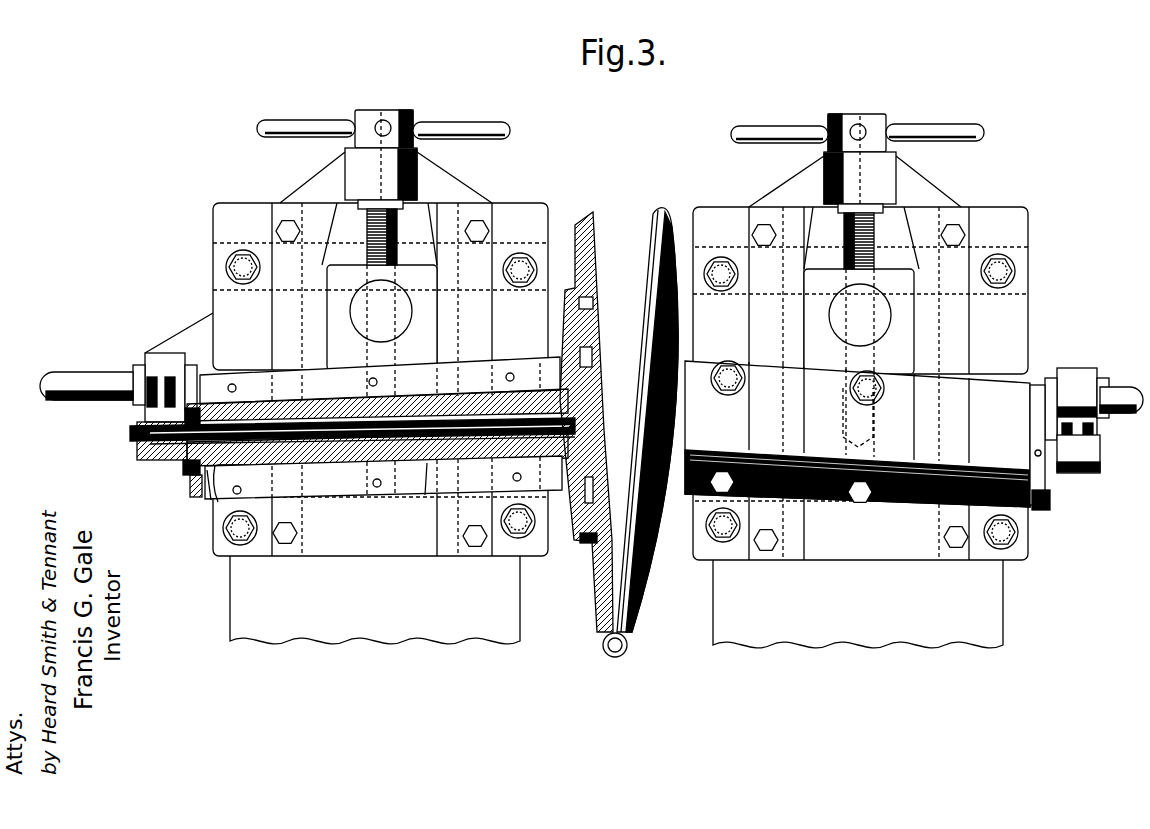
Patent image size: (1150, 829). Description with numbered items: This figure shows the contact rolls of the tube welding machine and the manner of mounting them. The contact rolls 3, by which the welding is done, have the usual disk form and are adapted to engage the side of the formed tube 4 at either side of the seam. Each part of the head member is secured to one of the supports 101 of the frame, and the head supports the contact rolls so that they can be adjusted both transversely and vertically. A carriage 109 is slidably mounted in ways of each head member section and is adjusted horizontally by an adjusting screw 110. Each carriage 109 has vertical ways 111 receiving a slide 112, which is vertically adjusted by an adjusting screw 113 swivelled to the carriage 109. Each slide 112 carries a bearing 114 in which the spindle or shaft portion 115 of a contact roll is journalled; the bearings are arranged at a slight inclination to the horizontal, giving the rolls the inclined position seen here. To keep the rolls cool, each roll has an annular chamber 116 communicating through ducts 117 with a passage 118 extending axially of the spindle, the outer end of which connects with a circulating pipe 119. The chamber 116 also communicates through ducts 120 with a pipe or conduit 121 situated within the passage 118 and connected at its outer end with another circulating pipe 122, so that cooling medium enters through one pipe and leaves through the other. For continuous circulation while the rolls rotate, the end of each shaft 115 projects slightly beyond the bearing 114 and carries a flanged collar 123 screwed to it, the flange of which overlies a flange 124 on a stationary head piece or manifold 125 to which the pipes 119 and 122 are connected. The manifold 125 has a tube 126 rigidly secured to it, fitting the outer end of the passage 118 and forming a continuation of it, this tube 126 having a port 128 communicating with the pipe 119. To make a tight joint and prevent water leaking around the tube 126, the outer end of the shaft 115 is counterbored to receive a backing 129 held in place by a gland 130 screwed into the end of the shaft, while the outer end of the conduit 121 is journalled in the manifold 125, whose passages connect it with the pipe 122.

The contact rolls 3 is at (648, 230).
The formed tube 4 is at (610, 656).
The supports of the frame 101 is at (240, 621).
The carriage 109 is at (230, 218).
The adjusting screw 110 is at (70, 372).
The vertical ways 111 is at (214, 290).
The slide 112 is at (340, 292).
The adjusting screw 113 is at (398, 227).
The bearing 114 is at (410, 490).
The spindle or shaft portion 115 is at (427, 463).
The annular chamber 116 is at (570, 518).
The ducts 117 is at (594, 456).
The passage 118 is at (342, 443).
The circulating pipe 119 is at (172, 377).
The ducts 120 is at (604, 400).
The pipe or conduit 121 is at (400, 430).
The circulating pipe 122 is at (148, 382).
The flanged collar 123 is at (193, 486).
The flange 124 is at (185, 470).
The stationary head piece or manifold 125 is at (138, 448).
The tube 126 is at (185, 461).
The port 128 is at (167, 417).
The backing 129 is at (211, 500).
The gland 130 is at (217, 482).